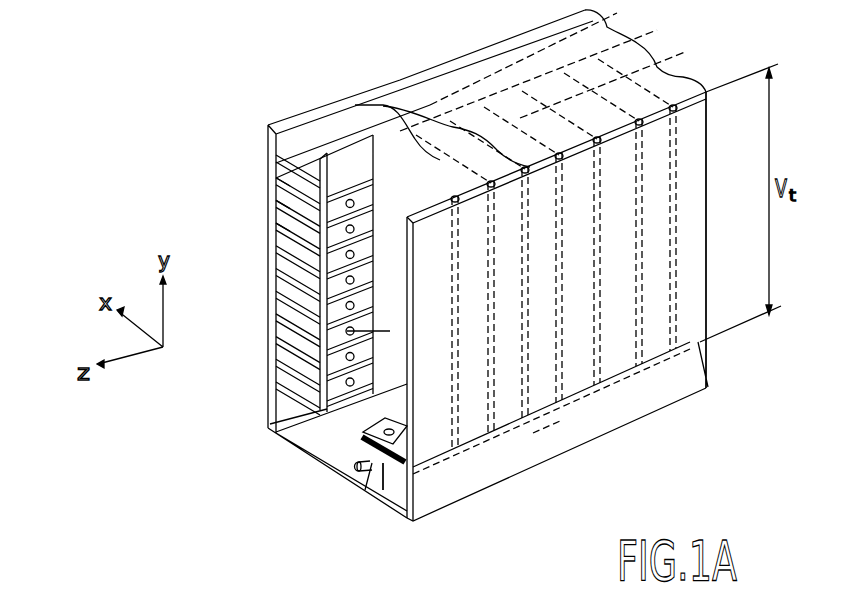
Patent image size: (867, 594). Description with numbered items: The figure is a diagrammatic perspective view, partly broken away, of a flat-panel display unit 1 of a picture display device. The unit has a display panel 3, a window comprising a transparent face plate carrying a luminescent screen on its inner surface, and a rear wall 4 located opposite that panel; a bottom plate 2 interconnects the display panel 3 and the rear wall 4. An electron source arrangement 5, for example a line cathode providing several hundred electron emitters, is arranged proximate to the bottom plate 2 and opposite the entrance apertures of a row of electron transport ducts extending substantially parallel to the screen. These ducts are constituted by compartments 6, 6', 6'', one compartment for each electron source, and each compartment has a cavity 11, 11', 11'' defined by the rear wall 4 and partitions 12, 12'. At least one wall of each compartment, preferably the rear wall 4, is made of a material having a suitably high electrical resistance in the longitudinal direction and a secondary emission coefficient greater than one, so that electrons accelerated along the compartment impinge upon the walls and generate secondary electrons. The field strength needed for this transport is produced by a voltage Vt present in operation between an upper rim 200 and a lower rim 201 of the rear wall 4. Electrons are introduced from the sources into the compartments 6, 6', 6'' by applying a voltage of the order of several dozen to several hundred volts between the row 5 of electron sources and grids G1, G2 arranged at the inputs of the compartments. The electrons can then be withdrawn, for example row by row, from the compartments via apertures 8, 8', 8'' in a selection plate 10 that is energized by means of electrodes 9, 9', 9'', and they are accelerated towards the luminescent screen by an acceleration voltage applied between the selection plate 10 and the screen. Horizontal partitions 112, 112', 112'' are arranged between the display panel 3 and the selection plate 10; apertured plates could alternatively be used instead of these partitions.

The flat-panel display unit 1 is at (730, 357).
The bottom plate 2 is at (295, 449).
The display panel 3 is at (316, 130).
The rear wall 4 is at (664, 395).
The electron source arrangement 5 is at (372, 470).
The compartment 6 is at (551, 437).
The compartment 6' is at (551, 434).
The compartment 6'' is at (568, 455).
The aperture 8 is at (276, 275).
The aperture 8' is at (276, 238).
The aperture 8'' is at (276, 264).
The electrode 9 is at (346, 235).
The electrode 9' is at (361, 217).
The electrode 9'' is at (363, 264).
The selection plate 10 is at (607, 20).
The cavity 11 is at (306, 347).
The cavity 11' is at (397, 102).
The cavity 11'' is at (456, 93).
The partition 12 is at (421, 351).
The partition 12' is at (550, 277).
The horizontal partition 112 is at (252, 176).
The horizontal partition 112' is at (233, 193).
The horizontal partition 112'' is at (233, 218).
The upper rim 200 is at (683, 97).
The lower rim 201 is at (702, 389).
The grid G1 is at (385, 492).
The grid G2 is at (340, 466).